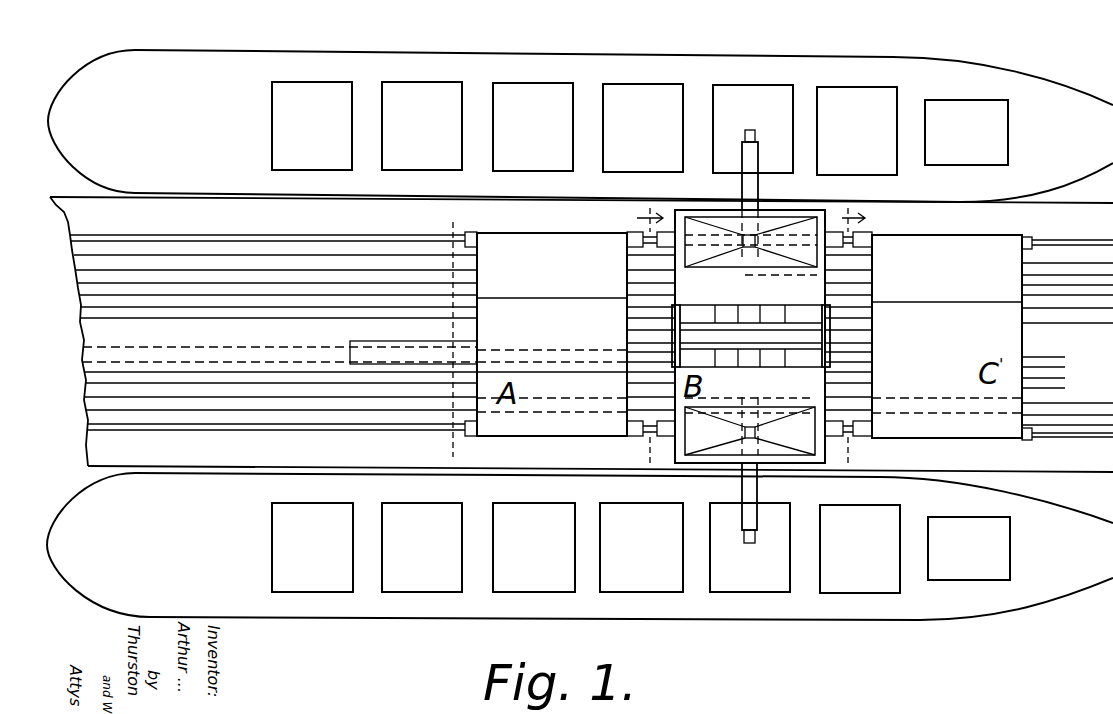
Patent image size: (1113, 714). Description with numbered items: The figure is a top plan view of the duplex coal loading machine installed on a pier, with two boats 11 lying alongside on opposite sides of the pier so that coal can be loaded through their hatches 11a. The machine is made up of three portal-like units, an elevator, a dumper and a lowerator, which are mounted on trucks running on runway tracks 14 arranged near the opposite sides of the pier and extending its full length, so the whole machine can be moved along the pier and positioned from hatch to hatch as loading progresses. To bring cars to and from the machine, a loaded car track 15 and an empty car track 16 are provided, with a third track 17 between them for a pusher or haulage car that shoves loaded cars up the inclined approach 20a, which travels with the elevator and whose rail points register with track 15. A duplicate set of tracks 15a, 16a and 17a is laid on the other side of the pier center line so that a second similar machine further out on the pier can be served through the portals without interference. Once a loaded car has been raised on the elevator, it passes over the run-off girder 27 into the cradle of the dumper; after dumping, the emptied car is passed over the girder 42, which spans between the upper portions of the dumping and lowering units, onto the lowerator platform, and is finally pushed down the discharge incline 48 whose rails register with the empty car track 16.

The boat 11 is at (737, 68).
The hatch 11a is at (783, 103).
The track 14 is at (137, 238).
The track 15 is at (105, 340).
The track 15a is at (210, 312).
The track 16 is at (187, 400).
The track 16a is at (212, 253).
The track 17 is at (115, 372).
The track 17a is at (260, 280).
The inclined approach 20a is at (413, 342).
The run-off girder 27 is at (628, 334).
The girder 42 is at (860, 342).
The discharge incline 48 is at (860, 401).